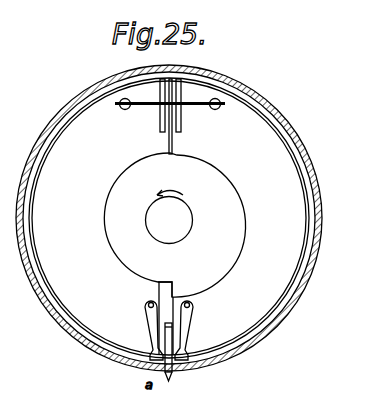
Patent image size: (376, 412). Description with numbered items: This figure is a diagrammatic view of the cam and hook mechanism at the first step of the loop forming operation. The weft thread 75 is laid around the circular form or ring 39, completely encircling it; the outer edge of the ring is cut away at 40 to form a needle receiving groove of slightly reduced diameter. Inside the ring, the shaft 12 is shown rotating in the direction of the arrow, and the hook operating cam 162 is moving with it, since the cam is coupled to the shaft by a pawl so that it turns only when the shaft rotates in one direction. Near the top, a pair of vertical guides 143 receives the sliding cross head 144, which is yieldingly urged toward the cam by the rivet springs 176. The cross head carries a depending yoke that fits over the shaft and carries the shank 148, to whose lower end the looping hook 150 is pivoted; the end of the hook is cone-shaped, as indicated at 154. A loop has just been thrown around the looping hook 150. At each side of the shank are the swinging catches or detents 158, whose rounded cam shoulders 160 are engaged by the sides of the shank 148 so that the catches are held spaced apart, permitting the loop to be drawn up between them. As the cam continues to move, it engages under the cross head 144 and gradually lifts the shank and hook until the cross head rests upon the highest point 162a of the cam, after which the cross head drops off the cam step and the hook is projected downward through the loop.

The shaft 12 is at (185, 217).
The circular form or ring 39 is at (293, 298).
The needle receiving groove 40 is at (306, 222).
The weft thread 75 is at (270, 110).
The vertical guides 143 is at (164, 131).
The cross head 144 is at (168, 142).
The shank 148 is at (160, 297).
The looping hook 150 is at (170, 352).
The cone-shaped end 154 is at (172, 377).
The swinging catches or detents 158 is at (193, 321).
The cam shoulders 160 is at (156, 327).
The hook operating cam 162 is at (223, 185).
The highest point of the cam 162a is at (178, 296).
The rivet springs 176 is at (190, 106).